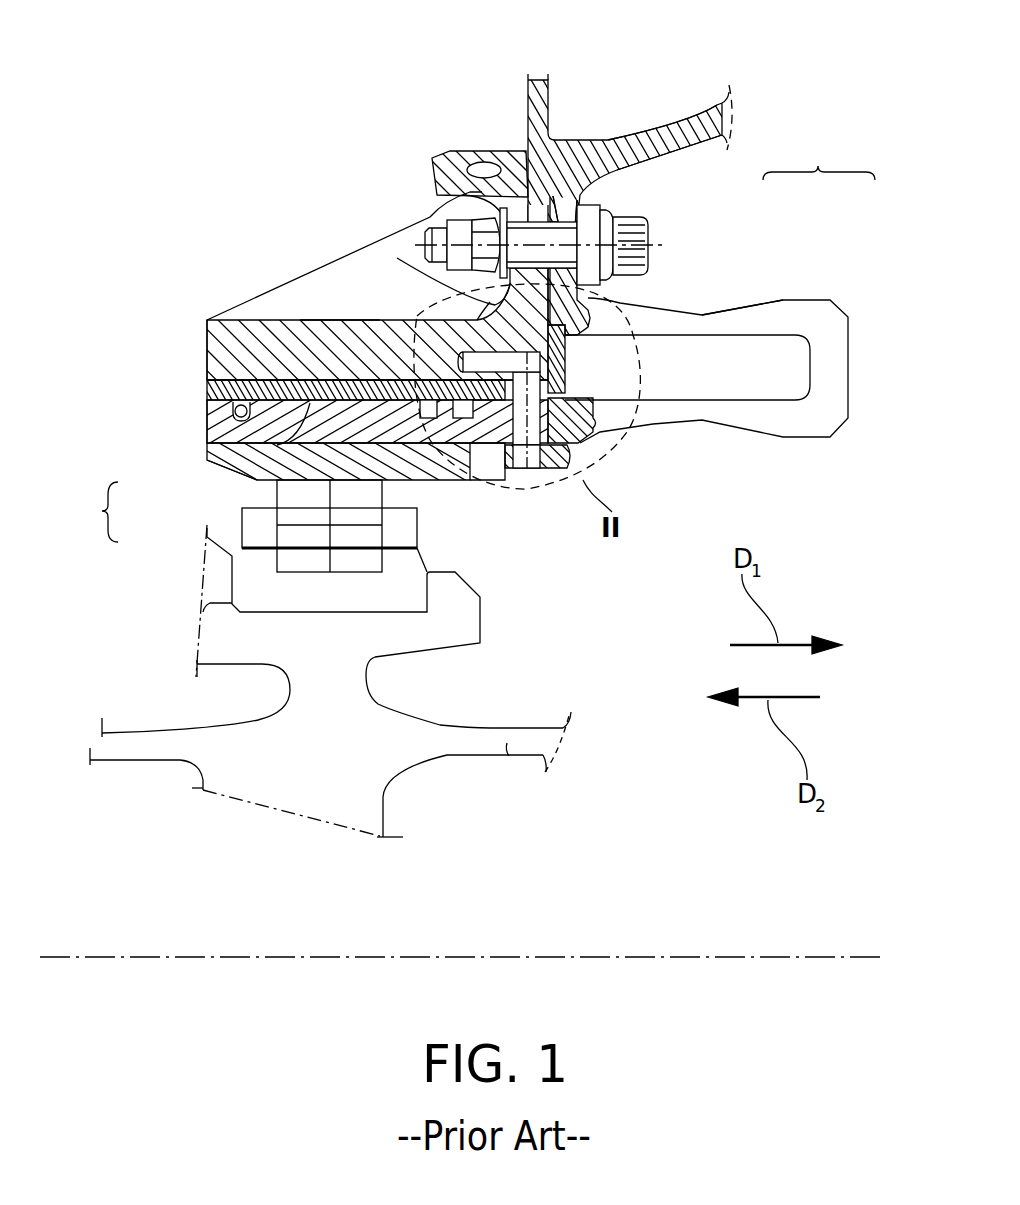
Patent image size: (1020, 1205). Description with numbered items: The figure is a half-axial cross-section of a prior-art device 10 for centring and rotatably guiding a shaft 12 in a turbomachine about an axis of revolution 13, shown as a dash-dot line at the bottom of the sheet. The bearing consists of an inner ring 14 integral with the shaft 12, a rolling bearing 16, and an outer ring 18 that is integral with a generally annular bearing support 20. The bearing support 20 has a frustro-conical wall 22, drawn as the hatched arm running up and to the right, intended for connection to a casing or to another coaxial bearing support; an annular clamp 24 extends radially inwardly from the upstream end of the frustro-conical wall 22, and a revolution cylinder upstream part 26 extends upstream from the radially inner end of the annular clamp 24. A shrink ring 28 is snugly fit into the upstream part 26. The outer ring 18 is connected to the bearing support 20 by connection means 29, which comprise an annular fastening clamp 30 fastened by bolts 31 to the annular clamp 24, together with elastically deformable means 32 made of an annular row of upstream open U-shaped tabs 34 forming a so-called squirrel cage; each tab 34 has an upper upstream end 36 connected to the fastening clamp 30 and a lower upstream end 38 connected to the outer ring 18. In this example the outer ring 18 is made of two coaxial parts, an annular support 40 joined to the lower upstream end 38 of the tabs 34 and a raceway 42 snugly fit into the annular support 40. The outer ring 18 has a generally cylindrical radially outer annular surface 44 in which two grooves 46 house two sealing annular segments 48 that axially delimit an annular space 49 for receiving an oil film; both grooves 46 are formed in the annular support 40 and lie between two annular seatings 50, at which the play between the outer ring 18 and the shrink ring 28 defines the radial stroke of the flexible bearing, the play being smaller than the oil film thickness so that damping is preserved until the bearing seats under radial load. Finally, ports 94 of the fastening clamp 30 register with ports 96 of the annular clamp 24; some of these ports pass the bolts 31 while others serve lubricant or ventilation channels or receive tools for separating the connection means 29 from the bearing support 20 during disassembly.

The device for centring and rotatably guiding a shaft 10 is at (325, 152).
The shaft 12 is at (507, 745).
The axis of revolution 13 is at (855, 957).
The inner ring 14 is at (380, 603).
The rolling bearing 16 is at (407, 528).
The outer ring 18 is at (92, 512).
The bearing support 20 is at (273, 312).
The frustro-conical wall 22 is at (716, 106).
The annular clamp 24 is at (356, 256).
The upstream part 26 is at (240, 352).
The shrink ring 28 is at (265, 388).
The means for connecting the outer ring to the bearing support 29 is at (819, 160).
The annular fastening clamp 30 is at (582, 200).
The bolts 31 is at (463, 227).
The elastically deformable means 32 is at (810, 294).
The tabs 34 is at (758, 320).
The upper upstream end 36 is at (615, 335).
The lower upstream end 38 is at (607, 437).
The annular support 40 is at (208, 430).
The raceway 42 is at (208, 457).
The radially outer annular surface 44 is at (378, 381).
The grooves 46 is at (210, 428).
The sealing annular segments 48 is at (220, 408).
The annular space 49 is at (275, 450).
The annular seatings 50 is at (207, 390).
The ports of the fastening clamp 94 is at (562, 227).
The ports of the annular clamp 96 is at (523, 232).